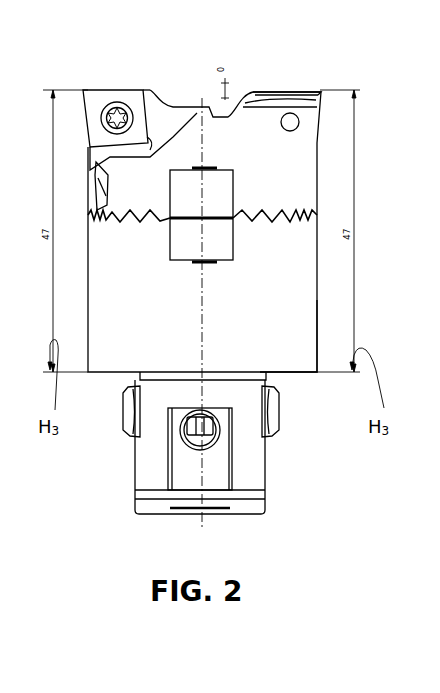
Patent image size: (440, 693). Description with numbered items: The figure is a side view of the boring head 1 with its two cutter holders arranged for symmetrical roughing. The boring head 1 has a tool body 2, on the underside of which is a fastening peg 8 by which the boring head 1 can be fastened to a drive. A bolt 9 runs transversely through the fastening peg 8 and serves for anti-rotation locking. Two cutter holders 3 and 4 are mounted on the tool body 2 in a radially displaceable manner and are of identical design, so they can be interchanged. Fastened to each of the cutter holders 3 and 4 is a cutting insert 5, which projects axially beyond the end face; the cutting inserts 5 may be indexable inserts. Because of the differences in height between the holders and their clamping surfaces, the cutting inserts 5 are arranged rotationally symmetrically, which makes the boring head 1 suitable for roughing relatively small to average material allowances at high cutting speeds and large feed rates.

The boring head 1 is at (285, 86).
The tool body 2 is at (317, 322).
The cutter holder 3 is at (147, 90).
The cutter holder 4 is at (318, 175).
The cutting insert 5 is at (92, 100).
The fastening peg 8 is at (265, 470).
The bolt 9 is at (270, 413).